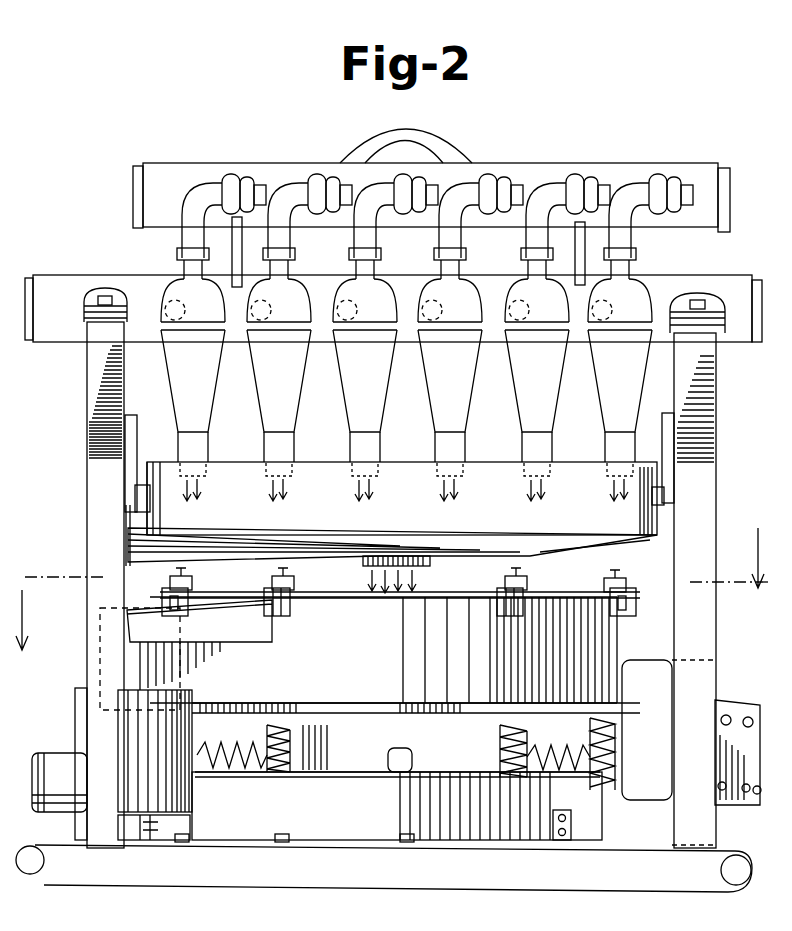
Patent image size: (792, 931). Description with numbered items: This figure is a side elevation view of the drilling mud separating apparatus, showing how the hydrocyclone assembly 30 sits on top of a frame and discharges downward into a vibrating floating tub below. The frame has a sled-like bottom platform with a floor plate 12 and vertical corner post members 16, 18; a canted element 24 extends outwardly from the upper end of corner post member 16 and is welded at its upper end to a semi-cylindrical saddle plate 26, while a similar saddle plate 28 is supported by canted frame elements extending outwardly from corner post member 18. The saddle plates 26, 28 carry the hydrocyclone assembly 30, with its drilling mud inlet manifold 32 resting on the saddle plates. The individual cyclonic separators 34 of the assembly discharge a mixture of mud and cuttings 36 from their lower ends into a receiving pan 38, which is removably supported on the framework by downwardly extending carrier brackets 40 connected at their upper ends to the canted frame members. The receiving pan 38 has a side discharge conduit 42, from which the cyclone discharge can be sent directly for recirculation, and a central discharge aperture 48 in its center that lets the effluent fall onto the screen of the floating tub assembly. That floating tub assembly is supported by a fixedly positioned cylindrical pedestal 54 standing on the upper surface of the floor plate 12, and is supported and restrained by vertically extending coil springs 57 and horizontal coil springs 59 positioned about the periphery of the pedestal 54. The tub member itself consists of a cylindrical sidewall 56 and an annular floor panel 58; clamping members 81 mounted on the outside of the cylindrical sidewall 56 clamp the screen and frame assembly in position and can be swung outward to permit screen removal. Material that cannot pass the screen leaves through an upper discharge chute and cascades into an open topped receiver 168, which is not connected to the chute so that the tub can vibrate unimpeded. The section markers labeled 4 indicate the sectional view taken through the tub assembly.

The floor plate 12 is at (70, 845).
The vertical corner post member 16 is at (87, 487).
The vertical corner post member 18 is at (716, 628).
The canted element 24 is at (89, 397).
The semi-cylindrical saddle plate 26 is at (86, 326).
The saddle plate 28 is at (722, 334).
The hydrocyclone assembly 30 is at (76, 243).
The drilling mud inlet manifold 32 is at (70, 277).
The cyclonic separators 34 is at (205, 395).
The mixture of mud and cuttings 36 is at (402, 498).
The receiving pan 38 is at (326, 464).
The carrier brackets 40 is at (140, 437).
The side discharge conduit 42 is at (128, 548).
The central discharge aperture 48 is at (432, 572).
The cylindrical pedestal 54 is at (468, 771).
The cylindrical sidewall 56 is at (386, 698).
The vertically extending coil springs 57 is at (296, 746).
The annular floor panel 58 is at (388, 758).
The horizontal coil springs 59 is at (238, 770).
The clamping members 81 is at (298, 585).
The open topped receiver 168 is at (178, 802).
The section line 4 is at (392, 595).